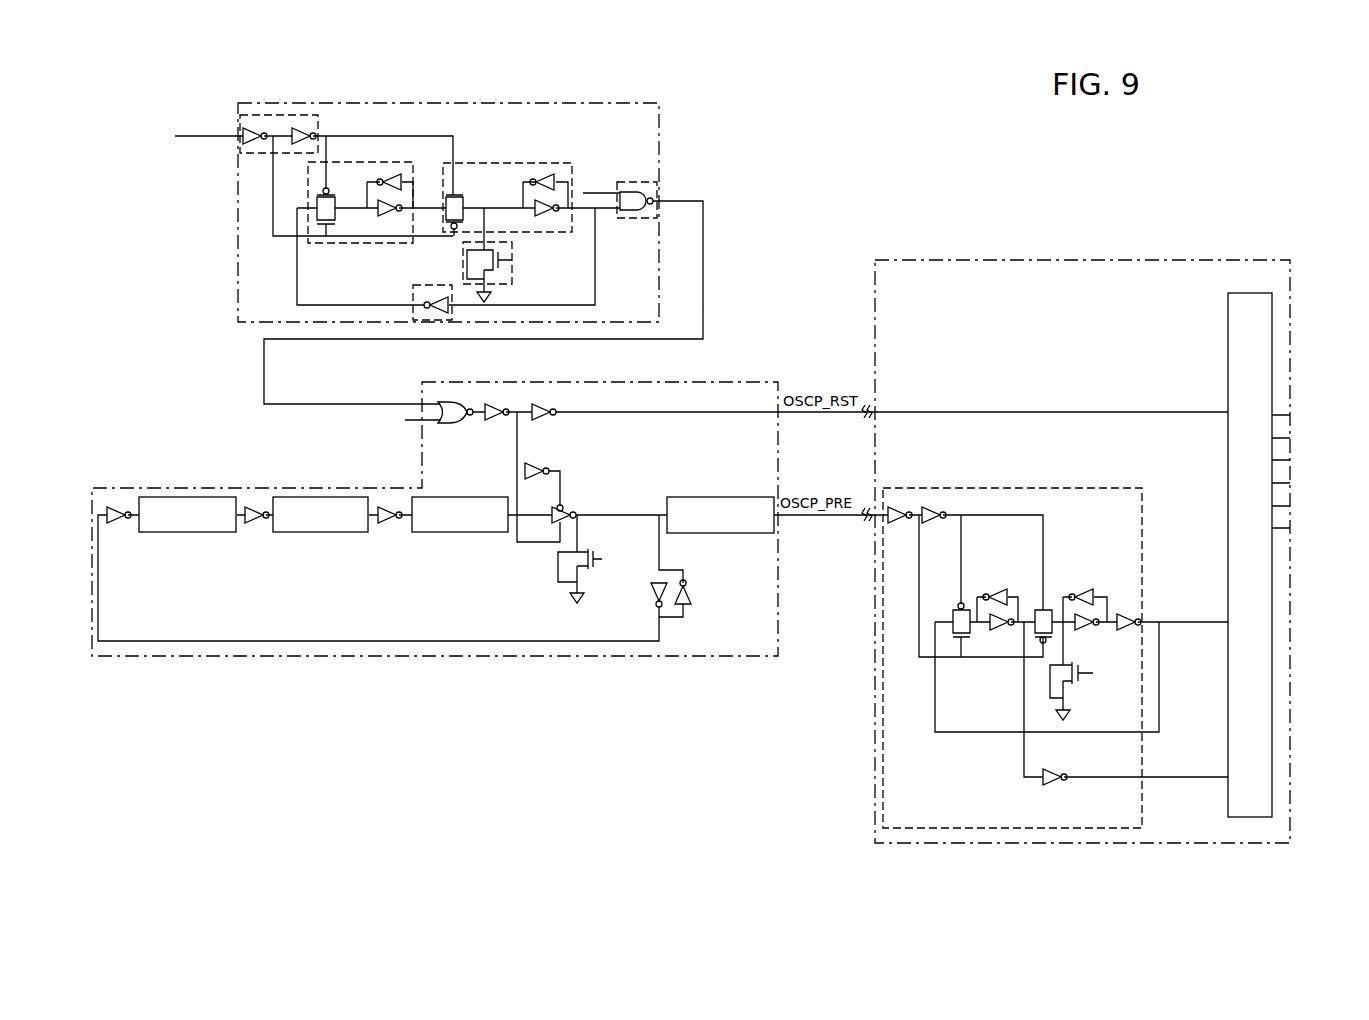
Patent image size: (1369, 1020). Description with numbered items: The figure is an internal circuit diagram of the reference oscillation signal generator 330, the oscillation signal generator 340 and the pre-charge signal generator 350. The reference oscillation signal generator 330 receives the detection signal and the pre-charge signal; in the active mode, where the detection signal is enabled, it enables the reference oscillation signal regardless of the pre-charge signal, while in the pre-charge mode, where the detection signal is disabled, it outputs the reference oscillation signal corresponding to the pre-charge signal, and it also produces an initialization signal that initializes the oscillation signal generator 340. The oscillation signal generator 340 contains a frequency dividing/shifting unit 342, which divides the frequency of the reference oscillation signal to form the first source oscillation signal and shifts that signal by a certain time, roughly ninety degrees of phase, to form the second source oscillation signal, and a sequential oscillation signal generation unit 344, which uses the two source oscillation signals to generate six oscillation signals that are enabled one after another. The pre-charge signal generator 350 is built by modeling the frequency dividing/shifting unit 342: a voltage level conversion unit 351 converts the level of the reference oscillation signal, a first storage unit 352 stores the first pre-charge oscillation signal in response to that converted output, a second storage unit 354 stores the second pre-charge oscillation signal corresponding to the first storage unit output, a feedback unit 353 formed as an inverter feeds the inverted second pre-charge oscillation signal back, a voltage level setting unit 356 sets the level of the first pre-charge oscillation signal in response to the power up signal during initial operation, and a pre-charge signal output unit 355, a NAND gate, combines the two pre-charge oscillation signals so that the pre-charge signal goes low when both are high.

The reference oscillation signal generator 330 is at (697, 382).
The oscillation signal generator 340 is at (1247, 260).
The frequency dividing/shifting unit 342 is at (1068, 488).
The sequential oscillation signal generation unit 344 is at (1247, 293).
The pre-charge signal generator 350 is at (434, 253).
The voltage level conversion unit 351 is at (320, 117).
The first storage unit 352 is at (367, 243).
The feedback unit 353 is at (433, 284).
The second storage unit 354 is at (537, 162).
The pre-charge signal output unit 355 is at (633, 181).
The voltage level setting unit 356 is at (515, 282).